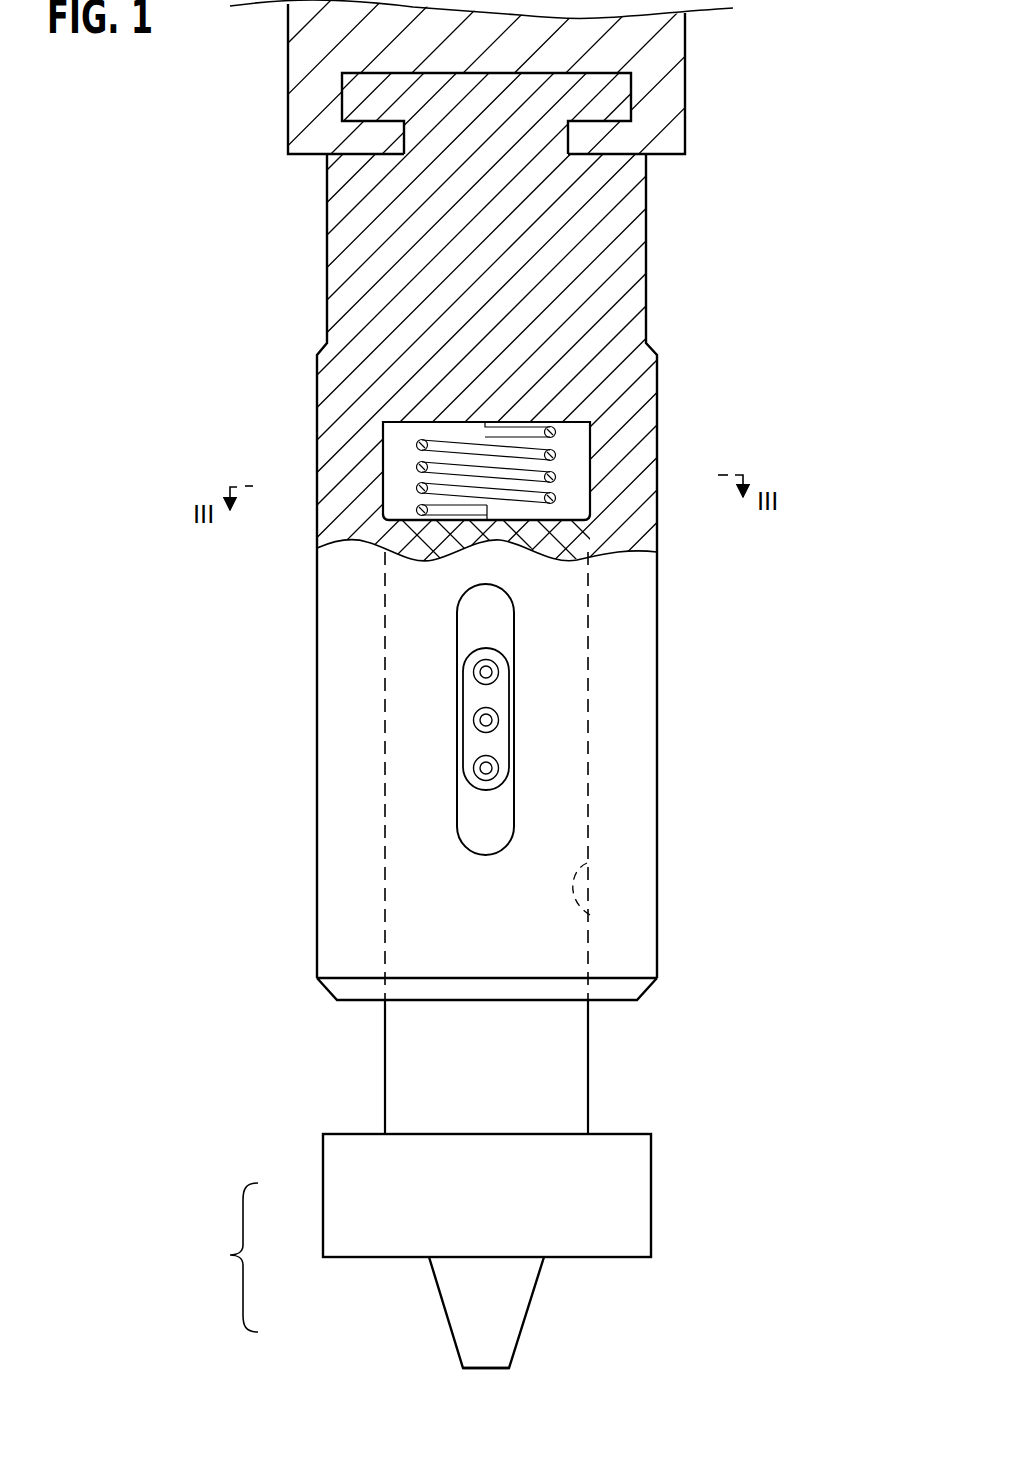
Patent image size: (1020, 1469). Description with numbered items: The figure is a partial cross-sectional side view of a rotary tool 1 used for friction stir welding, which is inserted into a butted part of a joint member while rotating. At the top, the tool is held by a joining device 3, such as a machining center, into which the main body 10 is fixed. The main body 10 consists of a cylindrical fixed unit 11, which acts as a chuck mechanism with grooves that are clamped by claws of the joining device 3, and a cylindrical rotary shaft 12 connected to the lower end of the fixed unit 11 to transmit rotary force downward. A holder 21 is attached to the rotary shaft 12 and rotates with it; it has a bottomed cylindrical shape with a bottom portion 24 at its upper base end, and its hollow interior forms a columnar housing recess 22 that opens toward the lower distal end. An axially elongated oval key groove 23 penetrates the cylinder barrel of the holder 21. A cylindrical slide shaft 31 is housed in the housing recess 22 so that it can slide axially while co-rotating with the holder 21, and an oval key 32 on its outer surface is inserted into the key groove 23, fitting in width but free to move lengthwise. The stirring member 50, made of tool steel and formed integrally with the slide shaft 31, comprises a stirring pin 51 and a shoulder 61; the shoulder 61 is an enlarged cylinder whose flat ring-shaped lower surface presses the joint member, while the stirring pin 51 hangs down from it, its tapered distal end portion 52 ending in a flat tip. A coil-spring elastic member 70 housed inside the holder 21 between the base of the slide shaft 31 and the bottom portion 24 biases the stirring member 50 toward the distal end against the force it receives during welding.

The rotary tool 1 is at (785, 300).
The joining device 3 is at (307, 58).
The main body 10 is at (728, 392).
The fixed unit 11 is at (460, 137).
The rotary shaft 12 is at (643, 197).
The holder 21 is at (340, 587).
The housing recess 22 is at (590, 915).
The key groove 23 is at (497, 587).
The bottom portion 24 is at (420, 385).
The slide shaft 31 is at (422, 1040).
The key 32 is at (498, 698).
The stirring member 50 is at (221, 1257).
The stirring pin 51 is at (455, 1288).
The distal end portion 52 is at (472, 1340).
The shoulder 61 is at (353, 1190).
The elastic member 70 is at (555, 497).